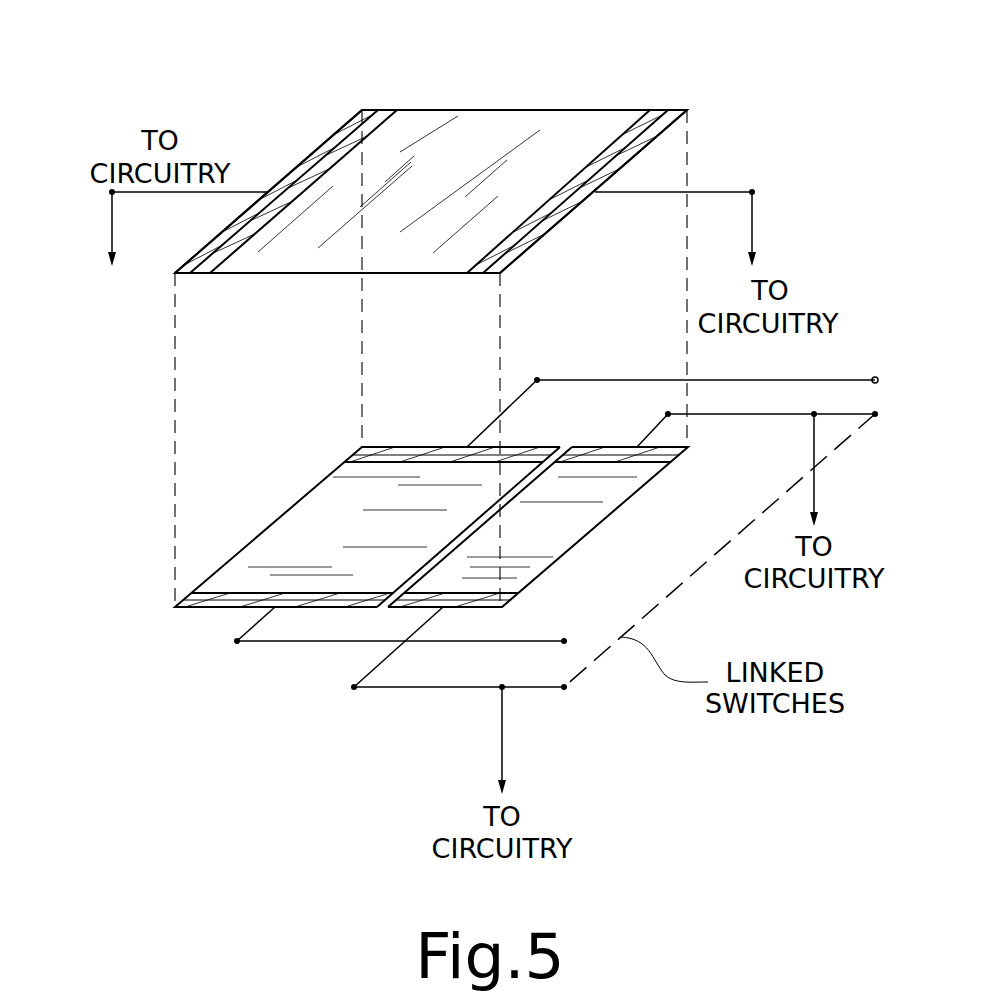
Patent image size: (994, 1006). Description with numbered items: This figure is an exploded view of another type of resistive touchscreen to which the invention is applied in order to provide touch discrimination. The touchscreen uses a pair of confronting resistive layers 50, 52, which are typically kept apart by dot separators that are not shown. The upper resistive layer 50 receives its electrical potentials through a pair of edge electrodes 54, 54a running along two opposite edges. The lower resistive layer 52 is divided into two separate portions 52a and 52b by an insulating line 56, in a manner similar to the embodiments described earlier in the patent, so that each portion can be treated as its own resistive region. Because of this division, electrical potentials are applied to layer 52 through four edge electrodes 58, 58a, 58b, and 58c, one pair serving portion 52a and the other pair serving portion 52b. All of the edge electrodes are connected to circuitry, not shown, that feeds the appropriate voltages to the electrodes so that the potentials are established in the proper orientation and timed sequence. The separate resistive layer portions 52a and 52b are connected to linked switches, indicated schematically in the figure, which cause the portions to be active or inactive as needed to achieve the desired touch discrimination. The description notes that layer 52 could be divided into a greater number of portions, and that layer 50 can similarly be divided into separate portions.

The resistive layer 50 is at (488, 125).
The edge electrode 54 is at (343, 137).
The edge electrode 54a is at (669, 110).
The resistive layer 52 is at (228, 583).
The resistive layer portion 52a is at (292, 536).
The resistive layer portion 52b is at (507, 539).
The insulating line 56 is at (410, 575).
The edge electrode 58 is at (222, 602).
The edge electrode 58a is at (405, 452).
The edge electrode 58b is at (432, 597).
The edge electrode 58c is at (597, 452).